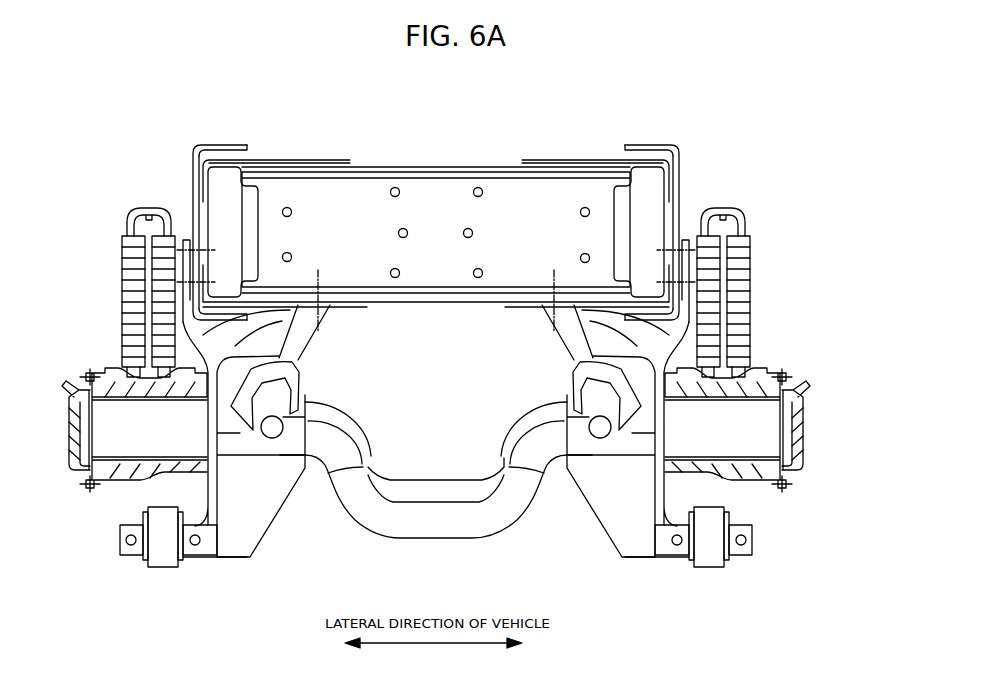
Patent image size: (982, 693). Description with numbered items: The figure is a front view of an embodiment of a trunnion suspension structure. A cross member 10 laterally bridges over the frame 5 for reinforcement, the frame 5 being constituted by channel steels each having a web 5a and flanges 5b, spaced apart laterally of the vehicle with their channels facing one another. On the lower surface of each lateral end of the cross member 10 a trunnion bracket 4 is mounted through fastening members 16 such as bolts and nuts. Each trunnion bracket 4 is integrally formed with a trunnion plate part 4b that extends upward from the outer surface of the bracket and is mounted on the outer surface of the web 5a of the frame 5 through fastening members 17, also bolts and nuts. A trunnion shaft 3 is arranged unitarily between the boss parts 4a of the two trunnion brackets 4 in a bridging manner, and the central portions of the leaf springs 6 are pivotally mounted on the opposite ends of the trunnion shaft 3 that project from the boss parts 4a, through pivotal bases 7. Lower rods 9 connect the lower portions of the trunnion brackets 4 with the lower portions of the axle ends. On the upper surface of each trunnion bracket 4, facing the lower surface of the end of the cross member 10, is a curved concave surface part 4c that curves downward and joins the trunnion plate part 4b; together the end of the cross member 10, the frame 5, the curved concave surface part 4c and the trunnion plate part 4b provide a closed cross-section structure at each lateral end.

The trunnion shaft 3 is at (458, 518).
The trunnion bracket 4 is at (251, 556).
The boss part 4a is at (323, 440).
The trunnion plate part 4b is at (187, 292).
The curved concave surface part 4c is at (282, 320).
The frame 5 is at (190, 138).
The web 5a is at (193, 178).
The flange 5b is at (222, 146).
The leaf spring 6 is at (124, 312).
The pivotal base 7 is at (115, 377).
The lower rod 9 is at (163, 572).
The cross member 10 is at (447, 152).
The fastening member 16 is at (318, 268).
The fastening member 17 is at (210, 262).